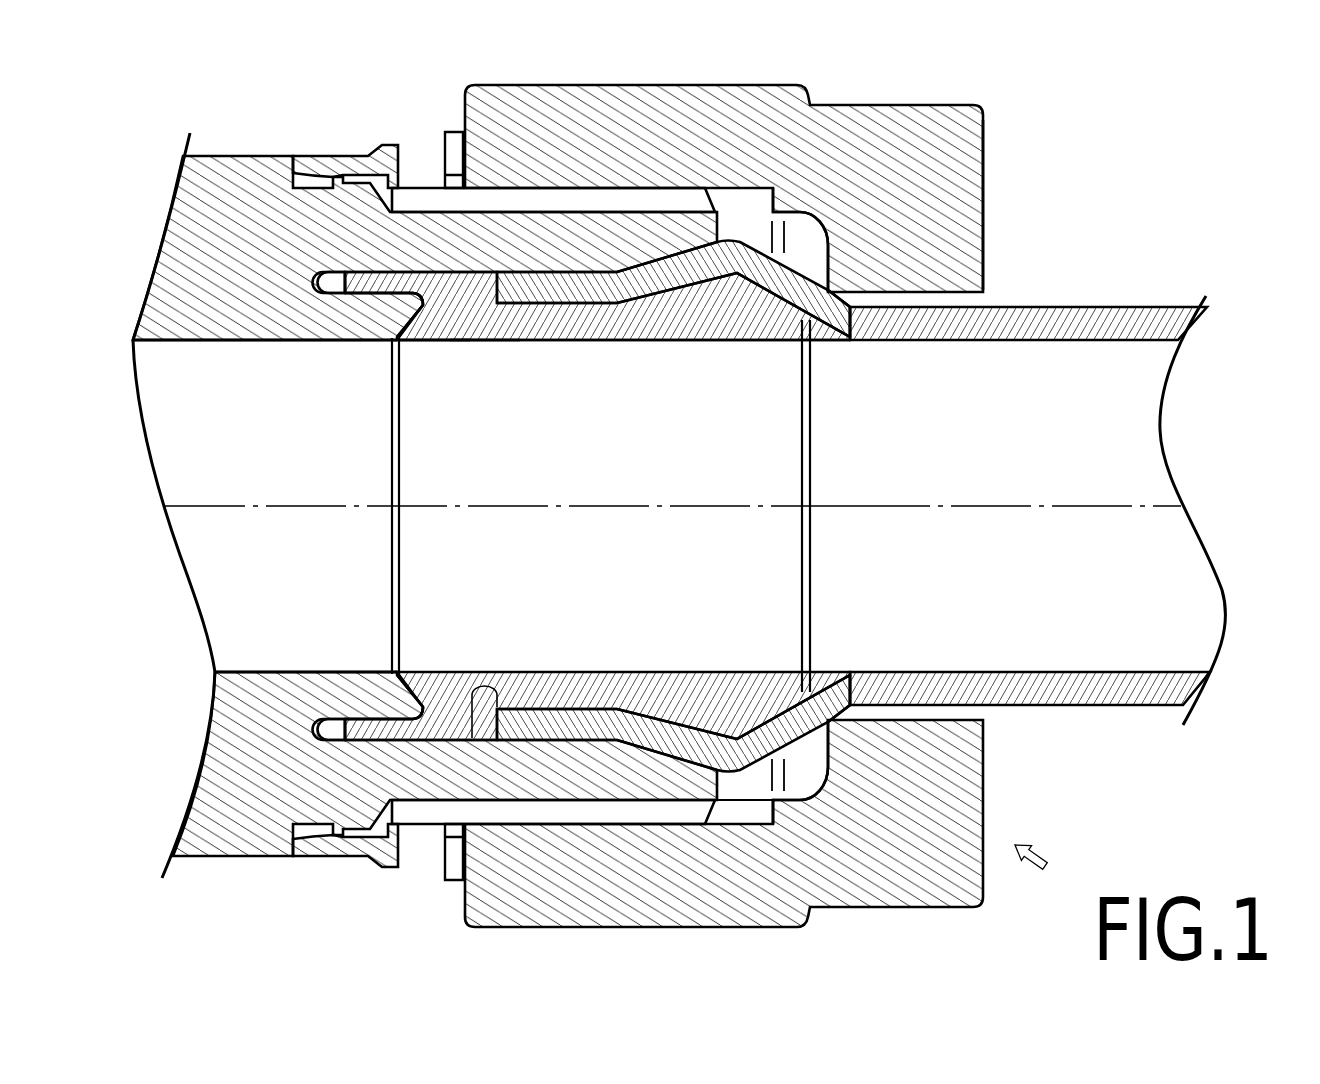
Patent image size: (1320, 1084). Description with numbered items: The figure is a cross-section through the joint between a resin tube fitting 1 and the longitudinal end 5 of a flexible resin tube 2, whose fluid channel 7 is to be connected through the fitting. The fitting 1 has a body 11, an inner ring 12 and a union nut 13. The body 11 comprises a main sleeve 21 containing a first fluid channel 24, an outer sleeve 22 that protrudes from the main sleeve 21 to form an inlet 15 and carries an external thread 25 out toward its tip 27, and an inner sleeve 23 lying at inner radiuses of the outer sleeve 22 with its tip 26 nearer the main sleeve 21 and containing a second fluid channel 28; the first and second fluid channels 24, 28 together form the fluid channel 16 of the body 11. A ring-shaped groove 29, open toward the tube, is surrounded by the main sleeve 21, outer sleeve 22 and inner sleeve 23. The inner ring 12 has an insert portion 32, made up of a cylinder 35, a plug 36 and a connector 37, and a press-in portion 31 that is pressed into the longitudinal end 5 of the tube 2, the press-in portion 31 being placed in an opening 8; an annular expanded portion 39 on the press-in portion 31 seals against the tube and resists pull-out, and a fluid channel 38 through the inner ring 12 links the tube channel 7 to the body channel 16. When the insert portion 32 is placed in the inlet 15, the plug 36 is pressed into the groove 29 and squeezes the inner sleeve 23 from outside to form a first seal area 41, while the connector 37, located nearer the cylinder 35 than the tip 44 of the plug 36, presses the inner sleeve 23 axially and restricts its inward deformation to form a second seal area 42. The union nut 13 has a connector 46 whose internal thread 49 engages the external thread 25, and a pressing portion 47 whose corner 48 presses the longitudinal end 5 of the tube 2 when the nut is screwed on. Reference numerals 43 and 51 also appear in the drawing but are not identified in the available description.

The resin tube fitting 1 is at (1039, 859).
The tube 2 is at (1104, 307).
The longitudinal end 5 is at (572, 708).
The fluid channel 7 is at (1049, 565).
The opening 8 is at (472, 692).
The body 11 is at (237, 856).
The inner ring 12 is at (814, 450).
The union nut 13 is at (985, 152).
The inlet 15 is at (462, 272).
The fluid channel 16 is at (265, 506).
The main sleeve 21 is at (233, 156).
The outer sleeve 22 is at (423, 210).
The inner sleeve 23 is at (370, 342).
The first fluid channel 24 is at (192, 468).
The external thread 25 is at (437, 812).
The tip 26 is at (473, 688).
The tip 27 is at (742, 768).
The second fluid channel 28 is at (320, 597).
The groove 29 is at (331, 282).
The press-in portion 31 is at (590, 342).
The insert portion 32 is at (440, 342).
The cylinder 35 is at (478, 342).
The plug 36 is at (355, 292).
The connector 37 is at (408, 342).
The fluid channel 38 is at (636, 565).
The expanded portion 39 is at (742, 276).
The first seal area 41 is at (358, 712).
The second seal area 42 is at (400, 680).
The lower lip 43 is at (414, 688).
The tip 44 is at (331, 732).
The connector 46 is at (465, 92).
The pressing portion 47 is at (984, 256).
The corner 48 is at (838, 292).
The internal thread 49 is at (758, 813).
The lower locking tip 51 is at (836, 738).